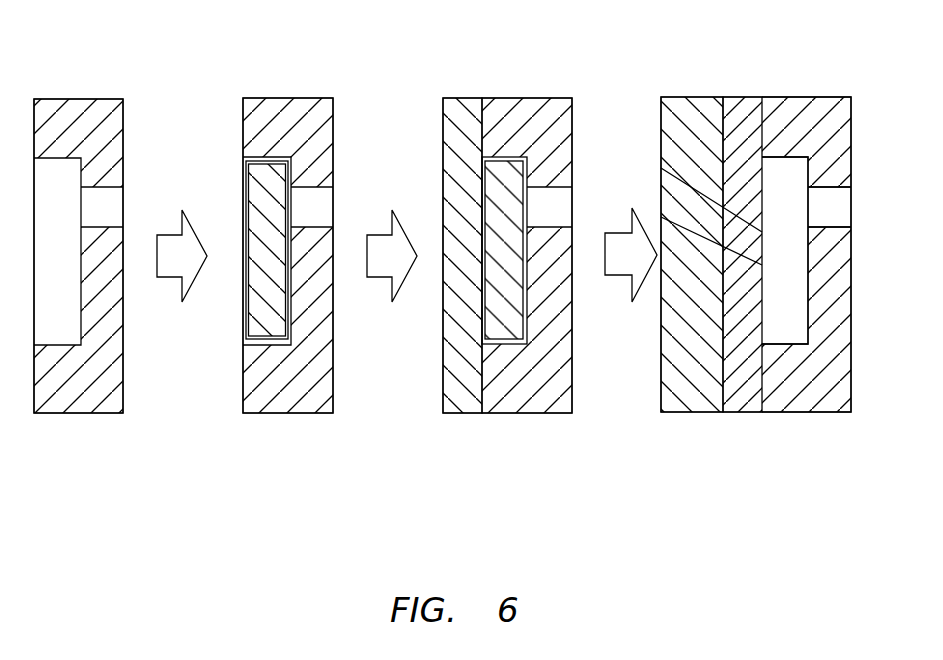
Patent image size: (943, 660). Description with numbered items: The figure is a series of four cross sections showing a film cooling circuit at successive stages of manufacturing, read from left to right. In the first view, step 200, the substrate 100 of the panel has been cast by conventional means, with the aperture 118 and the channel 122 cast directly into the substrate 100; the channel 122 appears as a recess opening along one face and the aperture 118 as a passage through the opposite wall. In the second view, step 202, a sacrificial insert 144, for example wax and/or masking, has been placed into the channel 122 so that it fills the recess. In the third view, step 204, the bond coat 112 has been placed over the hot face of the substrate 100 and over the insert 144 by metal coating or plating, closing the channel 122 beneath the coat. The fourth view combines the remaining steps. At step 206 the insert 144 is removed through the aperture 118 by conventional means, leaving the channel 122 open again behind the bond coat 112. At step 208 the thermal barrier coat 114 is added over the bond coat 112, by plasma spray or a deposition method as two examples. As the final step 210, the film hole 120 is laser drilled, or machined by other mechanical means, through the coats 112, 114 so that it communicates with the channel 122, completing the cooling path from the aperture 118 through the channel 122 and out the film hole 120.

The substrate 100 is at (101, 103).
The bond coat 112 is at (460, 103).
The thermal barrier coat 114 is at (688, 103).
The aperture 118 is at (833, 207).
The film hole 120 is at (688, 213).
The channel 122 is at (787, 172).
The sacrificial insert 144 is at (242, 203).
The step 200 is at (97, 432).
The step 202 is at (257, 439).
The step 204 is at (481, 437).
The step 206 is at (740, 314).
The step 208 is at (740, 314).
The final step 210 is at (693, 427).